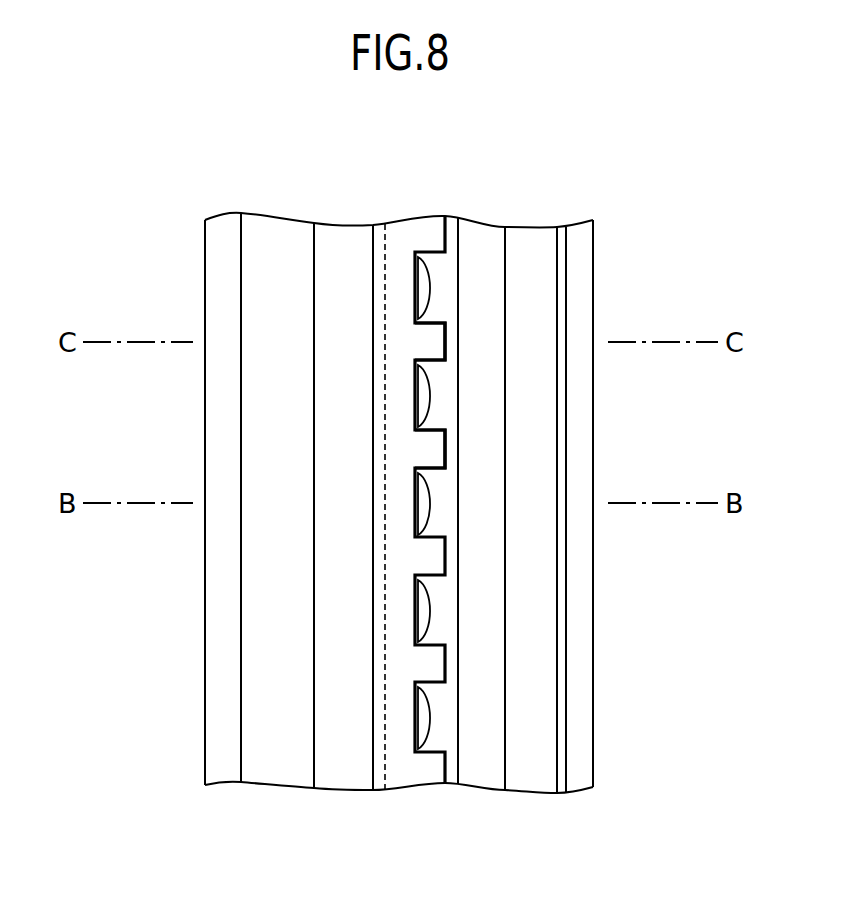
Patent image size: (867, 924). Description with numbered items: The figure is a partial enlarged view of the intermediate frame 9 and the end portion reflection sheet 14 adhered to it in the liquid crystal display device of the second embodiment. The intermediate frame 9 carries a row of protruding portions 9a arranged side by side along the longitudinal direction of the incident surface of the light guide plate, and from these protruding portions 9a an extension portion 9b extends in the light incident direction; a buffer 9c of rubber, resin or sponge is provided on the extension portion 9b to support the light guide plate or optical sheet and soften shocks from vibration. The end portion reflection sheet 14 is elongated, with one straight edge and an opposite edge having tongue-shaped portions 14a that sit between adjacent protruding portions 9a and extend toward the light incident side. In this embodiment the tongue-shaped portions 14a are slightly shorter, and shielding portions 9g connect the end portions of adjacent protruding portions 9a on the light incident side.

The intermediate frame 9 is at (223, 764).
The protruding portions 9a is at (435, 273).
The extension portion 9b is at (577, 762).
The buffer 9c is at (532, 762).
The shielding portions 9g is at (462, 445).
The end portion reflection sheet 14 is at (402, 762).
The tongue-shaped portions 14a is at (430, 455).